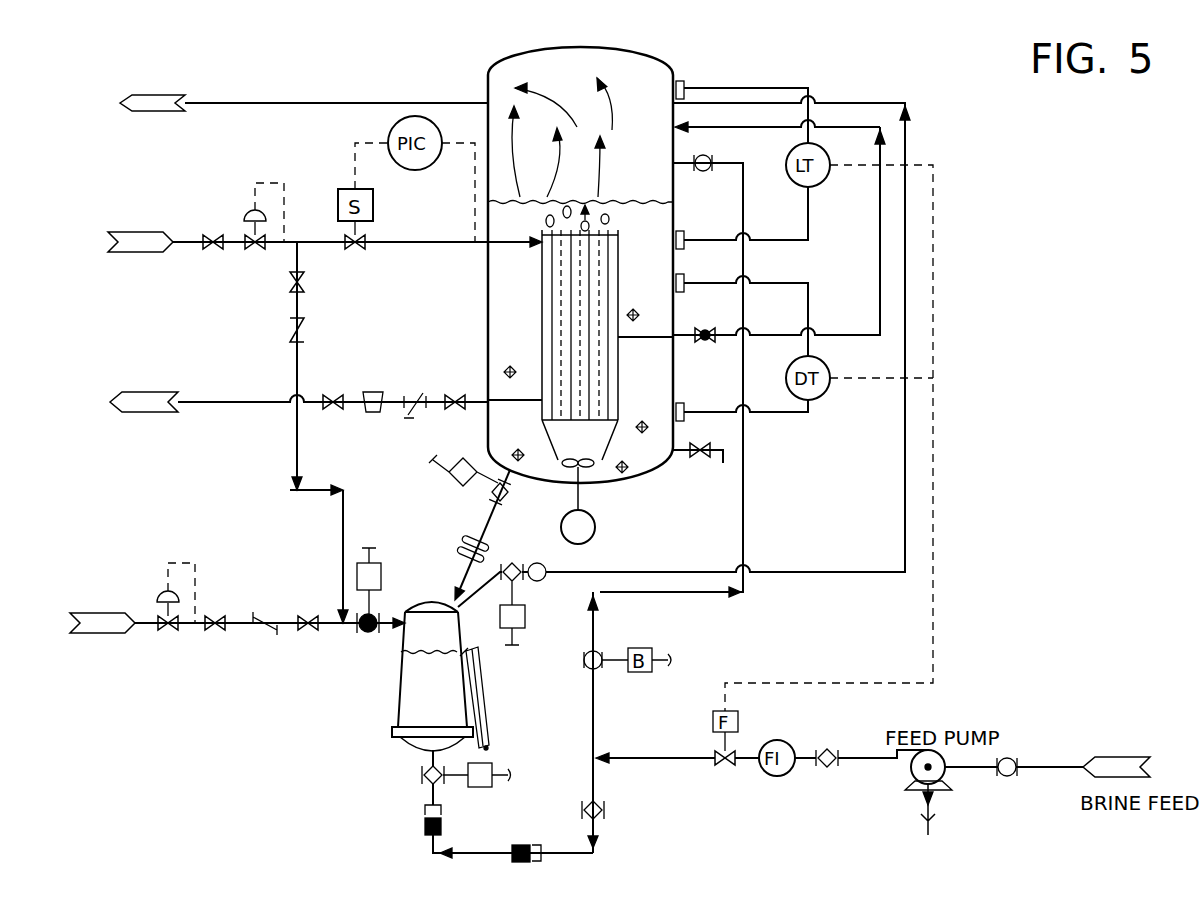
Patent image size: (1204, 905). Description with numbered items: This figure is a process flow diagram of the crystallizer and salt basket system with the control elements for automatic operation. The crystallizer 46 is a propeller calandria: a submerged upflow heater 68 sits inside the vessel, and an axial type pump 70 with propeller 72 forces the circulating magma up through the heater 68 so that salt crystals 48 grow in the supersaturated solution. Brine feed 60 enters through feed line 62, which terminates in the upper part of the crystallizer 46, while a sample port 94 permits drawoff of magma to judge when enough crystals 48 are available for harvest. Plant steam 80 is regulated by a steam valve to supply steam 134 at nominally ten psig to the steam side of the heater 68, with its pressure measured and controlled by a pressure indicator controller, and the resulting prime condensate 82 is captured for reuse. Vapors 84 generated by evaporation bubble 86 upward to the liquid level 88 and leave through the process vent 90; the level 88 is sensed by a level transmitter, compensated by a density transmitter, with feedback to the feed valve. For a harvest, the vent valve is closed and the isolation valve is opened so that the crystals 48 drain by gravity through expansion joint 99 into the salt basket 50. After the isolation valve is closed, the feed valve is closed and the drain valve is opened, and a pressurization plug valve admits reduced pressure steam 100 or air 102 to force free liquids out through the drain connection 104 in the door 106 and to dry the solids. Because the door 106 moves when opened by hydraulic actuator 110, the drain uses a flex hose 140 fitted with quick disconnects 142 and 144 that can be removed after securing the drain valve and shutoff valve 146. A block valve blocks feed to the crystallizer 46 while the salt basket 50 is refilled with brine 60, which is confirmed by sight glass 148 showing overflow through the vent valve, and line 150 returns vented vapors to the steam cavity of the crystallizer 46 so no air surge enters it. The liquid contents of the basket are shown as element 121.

The crystallizer 46 is at (663, 60).
The vapors 84 is at (543, 90).
The liquid level 88 is at (533, 200).
The bubbles 86 is at (610, 218).
The heater 68 is at (565, 331).
The salt crystals 48 is at (503, 372).
The supply steam 134 is at (489, 255).
The propeller 72 is at (568, 468).
The axial type pump 70 is at (582, 503).
The feed line 62 is at (743, 520).
The sample port 94 is at (738, 443).
The line 150 is at (905, 150).
The process vent 90 is at (303, 103).
The steam 80 is at (190, 244).
The prime condensate 82 is at (218, 404).
The steam 100 is at (340, 530).
The air 102 is at (240, 625).
The salt basket 50 is at (437, 604).
The liquid in crystallizer 121 is at (405, 690).
The hydraulic actuator 110 is at (480, 700).
The door 106 is at (402, 742).
The drain connection 104 is at (422, 772).
The quick disconnect 142 is at (425, 810).
The flex hose 140 is at (470, 856).
The quick disconnect 144 is at (540, 862).
The shutoff valve 146 is at (582, 812).
The expansion joint 99 is at (462, 545).
The sight glass 148 is at (537, 563).
The brine feed 60 is at (1046, 766).